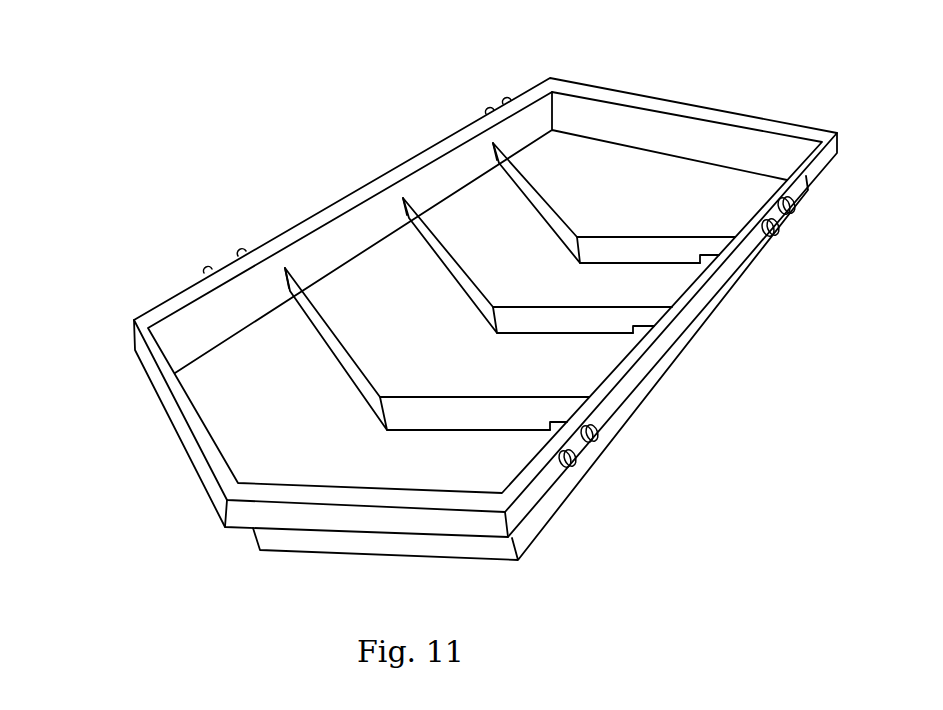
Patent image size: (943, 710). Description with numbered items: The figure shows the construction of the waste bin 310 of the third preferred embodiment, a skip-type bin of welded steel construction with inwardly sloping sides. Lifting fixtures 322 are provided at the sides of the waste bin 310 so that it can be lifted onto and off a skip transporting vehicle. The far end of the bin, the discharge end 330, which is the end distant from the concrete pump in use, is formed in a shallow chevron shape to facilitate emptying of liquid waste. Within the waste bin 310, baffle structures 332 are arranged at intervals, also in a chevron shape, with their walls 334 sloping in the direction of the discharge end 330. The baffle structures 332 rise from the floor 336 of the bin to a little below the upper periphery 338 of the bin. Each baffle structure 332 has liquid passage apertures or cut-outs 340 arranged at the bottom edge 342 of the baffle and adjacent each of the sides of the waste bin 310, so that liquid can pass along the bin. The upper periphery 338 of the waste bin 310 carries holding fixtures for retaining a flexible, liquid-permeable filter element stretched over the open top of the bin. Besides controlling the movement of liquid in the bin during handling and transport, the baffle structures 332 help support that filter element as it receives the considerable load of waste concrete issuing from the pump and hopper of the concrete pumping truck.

The waste bin 310 is at (485, 256).
The lifting fixtures 322 is at (530, 260).
The discharge end 330 is at (423, 384).
The baffle structures 332 is at (557, 301).
The walls 334 is at (432, 286).
The floor 336 is at (466, 314).
The upper periphery 338 is at (485, 305).
The liquid passage apertures 340 is at (473, 321).
The bottom edge 342 is at (376, 312).